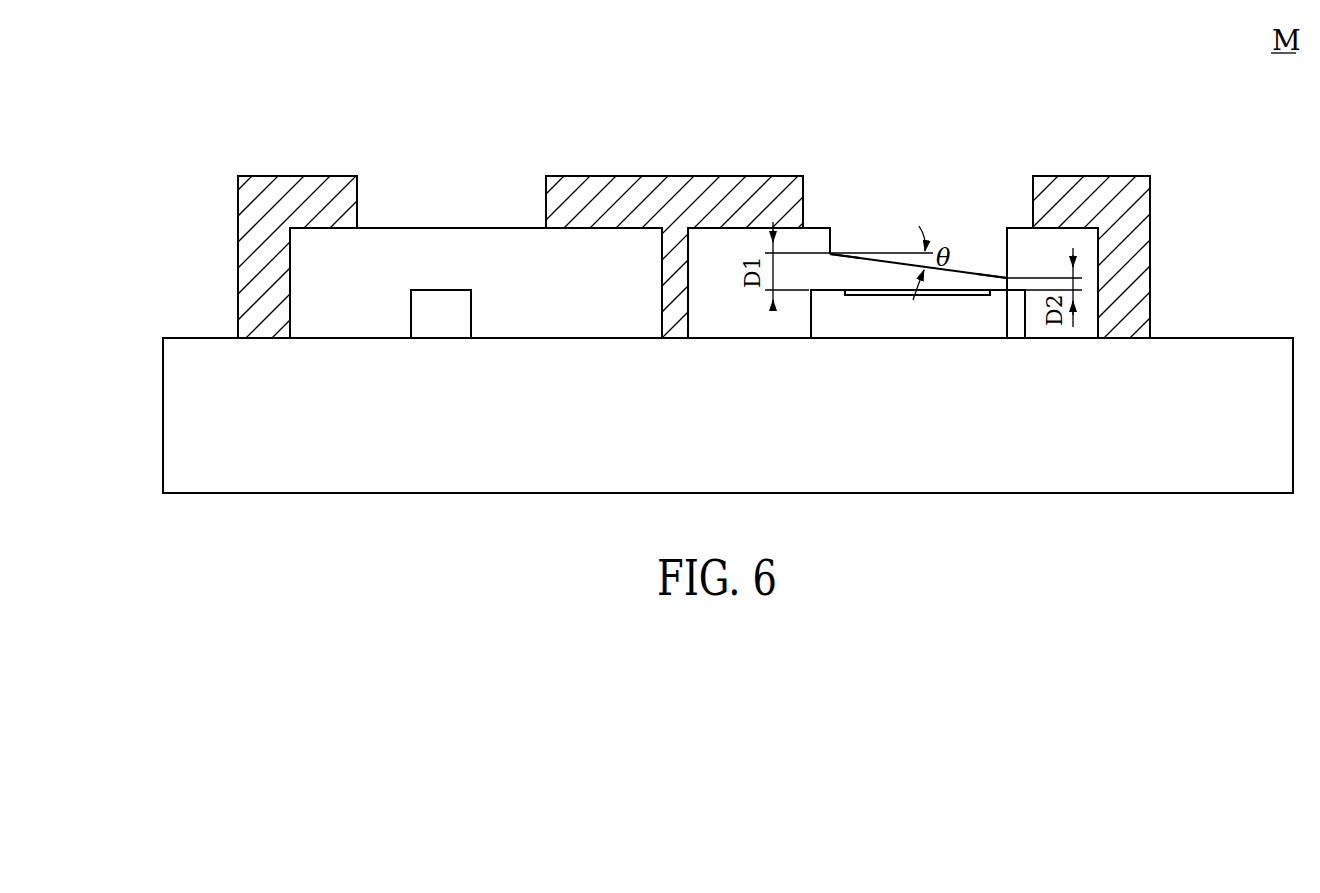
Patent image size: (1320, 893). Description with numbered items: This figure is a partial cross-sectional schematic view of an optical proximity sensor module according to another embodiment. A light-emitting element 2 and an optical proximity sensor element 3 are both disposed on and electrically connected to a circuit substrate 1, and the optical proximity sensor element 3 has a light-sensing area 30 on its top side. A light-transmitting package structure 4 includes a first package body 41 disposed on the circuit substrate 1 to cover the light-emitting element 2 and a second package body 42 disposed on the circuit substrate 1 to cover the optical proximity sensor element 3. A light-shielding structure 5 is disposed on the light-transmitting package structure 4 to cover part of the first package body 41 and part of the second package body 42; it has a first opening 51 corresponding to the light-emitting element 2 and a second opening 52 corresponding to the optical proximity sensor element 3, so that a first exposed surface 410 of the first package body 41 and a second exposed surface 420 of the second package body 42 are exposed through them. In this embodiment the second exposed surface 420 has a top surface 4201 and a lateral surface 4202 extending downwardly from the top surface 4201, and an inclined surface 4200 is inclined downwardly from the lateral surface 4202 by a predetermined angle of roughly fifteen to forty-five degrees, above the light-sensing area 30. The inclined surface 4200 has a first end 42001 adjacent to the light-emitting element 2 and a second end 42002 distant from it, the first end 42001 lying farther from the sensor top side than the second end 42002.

The circuit substrate 1 is at (162, 410).
The light-emitting element 2 is at (440, 336).
The optical proximity sensor element 3 is at (900, 339).
The light-transmitting package structure 4 is at (738, 404).
The light-shielding structure 5 is at (238, 258).
The light-sensing area 30 is at (938, 295).
The first package body 41 is at (623, 320).
The second package body 42 is at (728, 320).
The first opening 51 is at (487, 207).
The second opening 52 is at (908, 212).
The first exposed surface 410 is at (430, 228).
The second exposed surface 420 is at (985, 272).
The inclined surface 4200 is at (938, 268).
The top surface 4201 is at (830, 228).
The lateral surface 4202 is at (830, 240).
The first end 42001 is at (831, 256).
The second end 42002 is at (1007, 278).